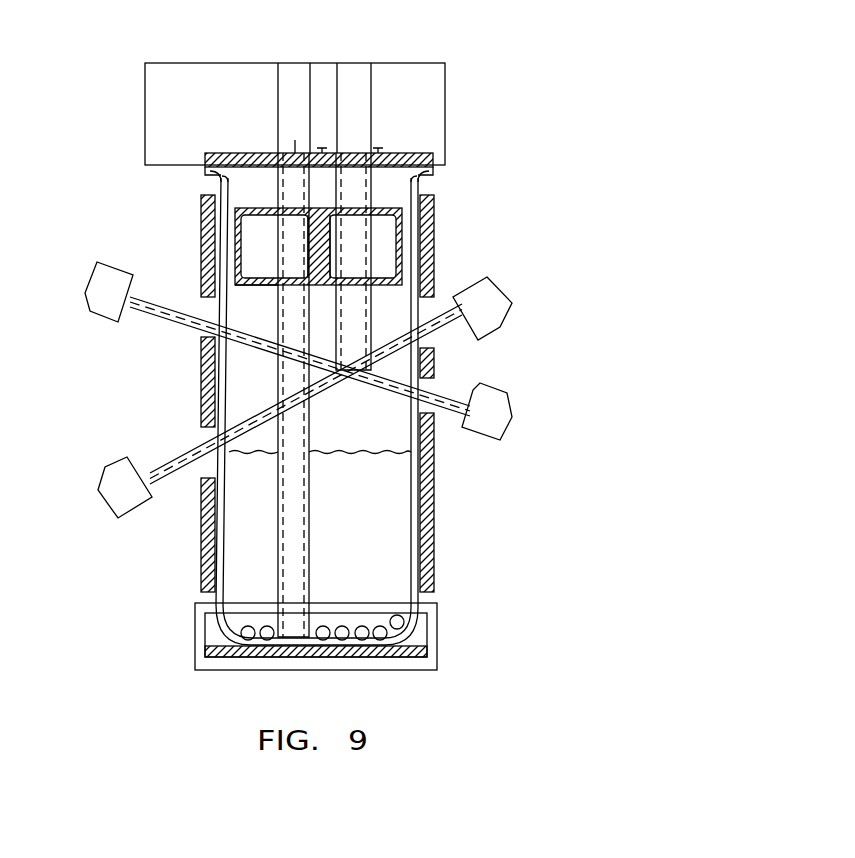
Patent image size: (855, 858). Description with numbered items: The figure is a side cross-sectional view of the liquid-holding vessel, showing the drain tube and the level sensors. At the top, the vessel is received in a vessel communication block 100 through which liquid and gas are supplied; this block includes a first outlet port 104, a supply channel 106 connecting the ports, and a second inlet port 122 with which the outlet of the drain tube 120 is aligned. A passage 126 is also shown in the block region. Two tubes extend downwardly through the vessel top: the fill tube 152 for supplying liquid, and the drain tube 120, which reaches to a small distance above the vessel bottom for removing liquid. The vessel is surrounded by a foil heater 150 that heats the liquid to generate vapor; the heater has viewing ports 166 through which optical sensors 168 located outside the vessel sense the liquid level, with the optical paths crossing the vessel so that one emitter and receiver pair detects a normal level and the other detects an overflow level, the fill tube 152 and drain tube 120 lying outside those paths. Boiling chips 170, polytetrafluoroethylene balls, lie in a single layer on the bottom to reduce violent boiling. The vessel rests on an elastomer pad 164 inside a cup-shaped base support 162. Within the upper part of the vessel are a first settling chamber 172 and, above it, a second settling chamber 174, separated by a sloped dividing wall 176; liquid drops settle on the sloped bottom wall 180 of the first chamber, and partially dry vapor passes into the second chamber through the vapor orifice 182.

The vessel communication block 100 is at (413, 70).
The first outlet port 104 is at (348, 152).
The supply channel 106 is at (350, 70).
The drain tube 120 is at (300, 502).
The second inlet port 122 is at (293, 150).
The inlet tube 126 is at (302, 68).
The heater 150 is at (205, 555).
The fill tube 152 is at (358, 325).
The base support 162 is at (200, 632).
The elastomer pad 164 is at (385, 660).
The viewing ports 166 is at (205, 329).
The optical sensors 168 is at (100, 282).
The boiling chips 170 is at (393, 616).
The first settling chamber 172 is at (245, 240).
The second settling chamber 174 is at (405, 188).
The sloped dividing wall 176 is at (222, 190).
The bottom wall 180 is at (262, 288).
The vapor orifice 182 is at (318, 210).